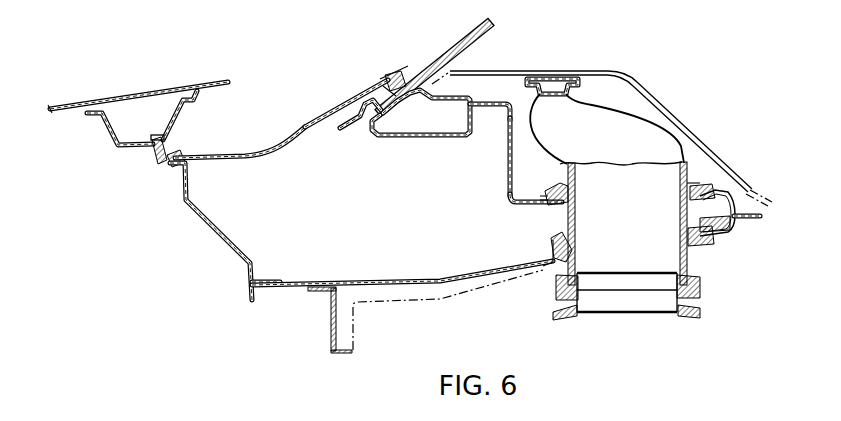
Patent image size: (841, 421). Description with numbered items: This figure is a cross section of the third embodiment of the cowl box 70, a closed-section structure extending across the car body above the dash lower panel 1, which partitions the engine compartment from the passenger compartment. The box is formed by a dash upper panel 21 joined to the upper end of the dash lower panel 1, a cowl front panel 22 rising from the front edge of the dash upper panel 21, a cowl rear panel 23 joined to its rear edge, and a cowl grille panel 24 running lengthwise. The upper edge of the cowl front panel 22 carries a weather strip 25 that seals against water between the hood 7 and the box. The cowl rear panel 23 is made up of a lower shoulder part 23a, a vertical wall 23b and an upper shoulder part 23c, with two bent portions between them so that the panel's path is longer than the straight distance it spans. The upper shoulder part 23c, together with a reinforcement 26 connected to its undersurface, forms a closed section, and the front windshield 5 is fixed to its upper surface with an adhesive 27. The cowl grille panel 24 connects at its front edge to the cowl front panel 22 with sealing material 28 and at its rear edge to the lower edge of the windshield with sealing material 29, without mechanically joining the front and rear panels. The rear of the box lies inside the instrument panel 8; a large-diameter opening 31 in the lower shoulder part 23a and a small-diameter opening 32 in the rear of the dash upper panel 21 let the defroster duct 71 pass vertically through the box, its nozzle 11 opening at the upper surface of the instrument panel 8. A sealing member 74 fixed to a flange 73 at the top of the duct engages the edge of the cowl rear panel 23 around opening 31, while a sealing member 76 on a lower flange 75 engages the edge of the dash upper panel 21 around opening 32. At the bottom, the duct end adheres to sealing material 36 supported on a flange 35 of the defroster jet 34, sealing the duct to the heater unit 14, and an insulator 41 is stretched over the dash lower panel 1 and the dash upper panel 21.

The dash lower panel 1 is at (331, 320).
The front windshield 5 is at (453, 47).
The hood 7 is at (187, 83).
The instrument panel 8 is at (658, 94).
The nozzle 11 is at (555, 78).
The heater unit 14 is at (693, 311).
The dash upper panel 21 is at (370, 281).
The cowl front panel 22 is at (204, 226).
The cowl rear panel 23 is at (517, 203).
The lower shoulder part 23a is at (512, 195).
The vertical wall 23b is at (512, 153).
The upper shoulder part 23c is at (467, 94).
The cowl grille panel 24 is at (332, 110).
The weather strip 25 is at (152, 160).
The reinforcement 26 is at (408, 134).
The adhesive 27 is at (363, 123).
The sealing material 28 is at (178, 160).
The sealing material 29 is at (397, 80).
The opening 31 is at (692, 203).
The opening 32 is at (688, 247).
The defroster jet 34 is at (630, 300).
The flange 35 is at (553, 283).
The sealing material 36 is at (692, 269).
The insulator 41 is at (413, 303).
The cowl box 70 is at (290, 158).
The defroster duct 71 is at (677, 143).
The flange 73 is at (576, 181).
The sealing member 74 is at (722, 193).
The lower flange 75 is at (560, 243).
The sealing member 76 is at (732, 225).